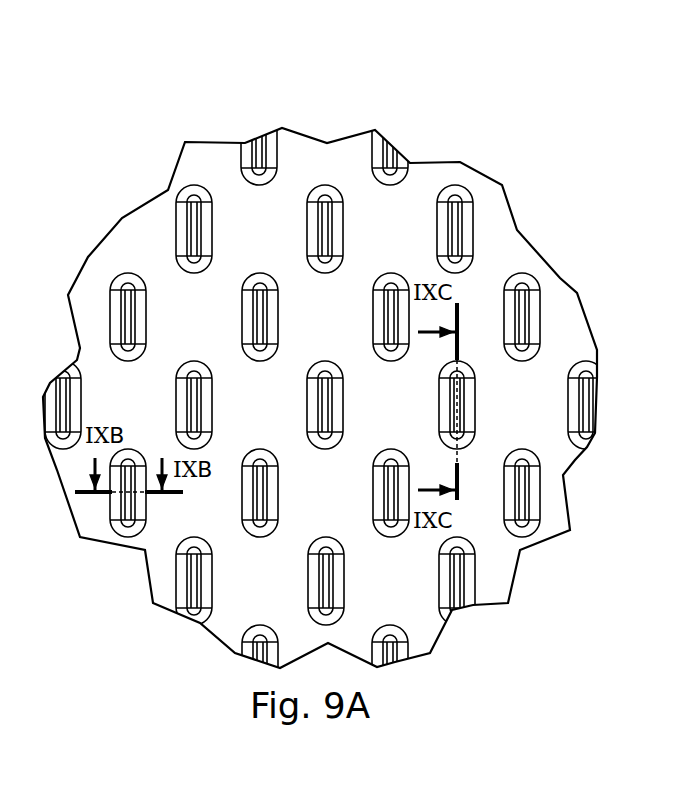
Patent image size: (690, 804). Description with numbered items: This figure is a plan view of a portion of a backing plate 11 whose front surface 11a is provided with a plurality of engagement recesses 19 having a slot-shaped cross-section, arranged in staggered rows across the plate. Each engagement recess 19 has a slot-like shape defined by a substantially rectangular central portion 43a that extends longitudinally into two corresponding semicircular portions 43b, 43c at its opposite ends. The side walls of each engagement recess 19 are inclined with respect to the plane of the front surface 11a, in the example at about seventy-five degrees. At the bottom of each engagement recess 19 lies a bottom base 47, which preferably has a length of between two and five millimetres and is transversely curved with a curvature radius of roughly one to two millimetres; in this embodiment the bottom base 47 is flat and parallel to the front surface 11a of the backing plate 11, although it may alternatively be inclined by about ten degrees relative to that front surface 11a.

The backing plate 11 is at (320, 350).
The front surface 11a is at (212, 349).
The engagement recess 19 is at (532, 336).
The central portion 43a is at (475, 217).
The semicircular portion 43b is at (456, 185).
The semicircular portion 43c is at (475, 277).
The bottom base 47 is at (539, 495).